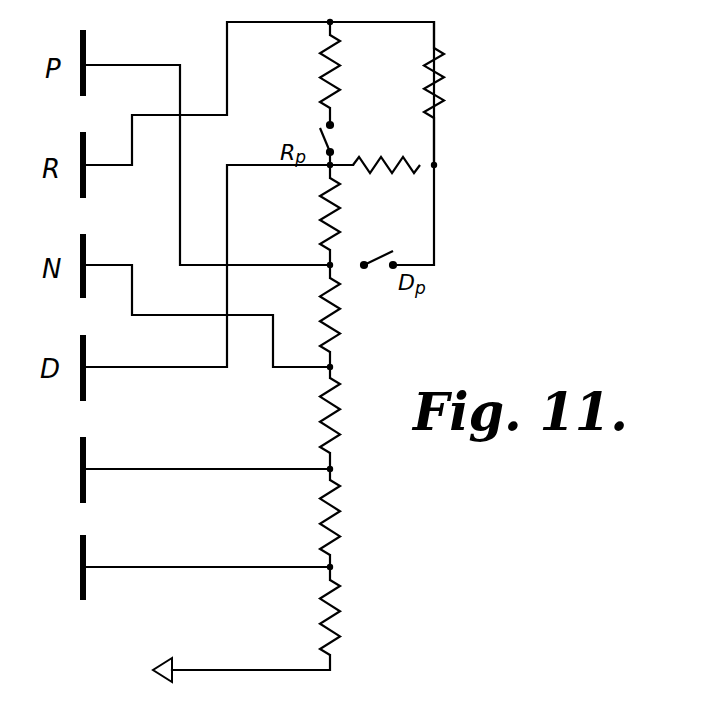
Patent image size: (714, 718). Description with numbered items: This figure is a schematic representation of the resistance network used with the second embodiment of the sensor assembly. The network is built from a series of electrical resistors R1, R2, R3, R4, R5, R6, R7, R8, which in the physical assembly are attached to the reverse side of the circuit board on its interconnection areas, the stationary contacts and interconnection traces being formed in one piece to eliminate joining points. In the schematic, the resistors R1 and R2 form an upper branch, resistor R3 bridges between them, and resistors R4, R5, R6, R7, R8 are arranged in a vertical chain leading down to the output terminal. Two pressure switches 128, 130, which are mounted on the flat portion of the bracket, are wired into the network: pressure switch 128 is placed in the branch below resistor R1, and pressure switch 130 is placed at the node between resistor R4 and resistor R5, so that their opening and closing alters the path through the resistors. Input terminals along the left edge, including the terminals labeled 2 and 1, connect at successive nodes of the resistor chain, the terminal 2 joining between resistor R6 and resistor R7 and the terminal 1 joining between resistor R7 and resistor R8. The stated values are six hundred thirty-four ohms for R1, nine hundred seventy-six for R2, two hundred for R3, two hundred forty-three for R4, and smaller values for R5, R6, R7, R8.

The pressure switch 128 is at (321, 129).
The pressure switch 130 is at (380, 256).
The terminal 1 is at (191, 567).
The terminal 2 is at (187, 470).
The electrical resistor R1 is at (352, 71).
The electrical resistor R2 is at (459, 83).
The electrical resistor R3 is at (386, 151).
The electrical resistor R4 is at (306, 214).
The electrical resistor R5 is at (349, 315).
The electrical resistor R6 is at (349, 415).
The electrical resistor R7 is at (350, 517).
The electrical resistor R8 is at (350, 617).